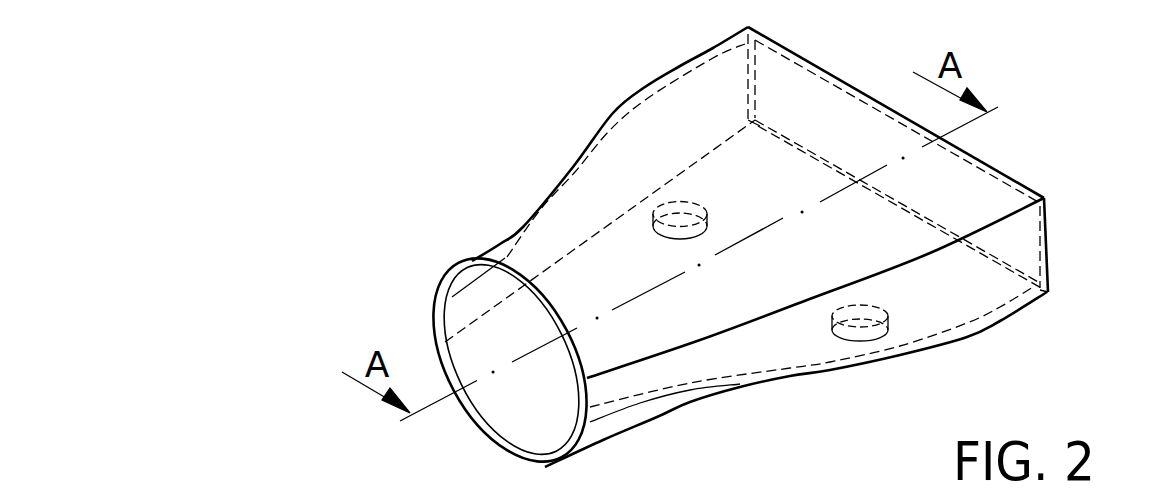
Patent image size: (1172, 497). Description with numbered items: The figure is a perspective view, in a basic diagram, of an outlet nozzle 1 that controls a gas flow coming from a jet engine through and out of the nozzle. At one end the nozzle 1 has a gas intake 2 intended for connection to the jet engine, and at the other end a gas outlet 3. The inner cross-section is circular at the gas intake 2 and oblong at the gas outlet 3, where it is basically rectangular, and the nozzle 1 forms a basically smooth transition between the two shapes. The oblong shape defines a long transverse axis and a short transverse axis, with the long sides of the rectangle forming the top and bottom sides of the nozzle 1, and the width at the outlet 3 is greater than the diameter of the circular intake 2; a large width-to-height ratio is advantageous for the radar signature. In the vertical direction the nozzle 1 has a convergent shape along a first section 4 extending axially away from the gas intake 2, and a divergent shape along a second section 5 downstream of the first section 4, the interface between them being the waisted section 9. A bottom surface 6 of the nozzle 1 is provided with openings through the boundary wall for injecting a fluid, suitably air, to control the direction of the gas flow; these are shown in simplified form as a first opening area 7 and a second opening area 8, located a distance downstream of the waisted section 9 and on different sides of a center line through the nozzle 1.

The outlet nozzle 1 is at (1085, 110).
The gas intake 2 is at (498, 403).
The gas outlet 3 is at (1033, 250).
The first convergent section 4 is at (635, 413).
The second divergent section 5 is at (1023, 312).
The bottom surface 6 is at (955, 320).
The first opening area 7 is at (662, 208).
The second opening area 8 is at (872, 323).
The waisted section 9 is at (785, 413).